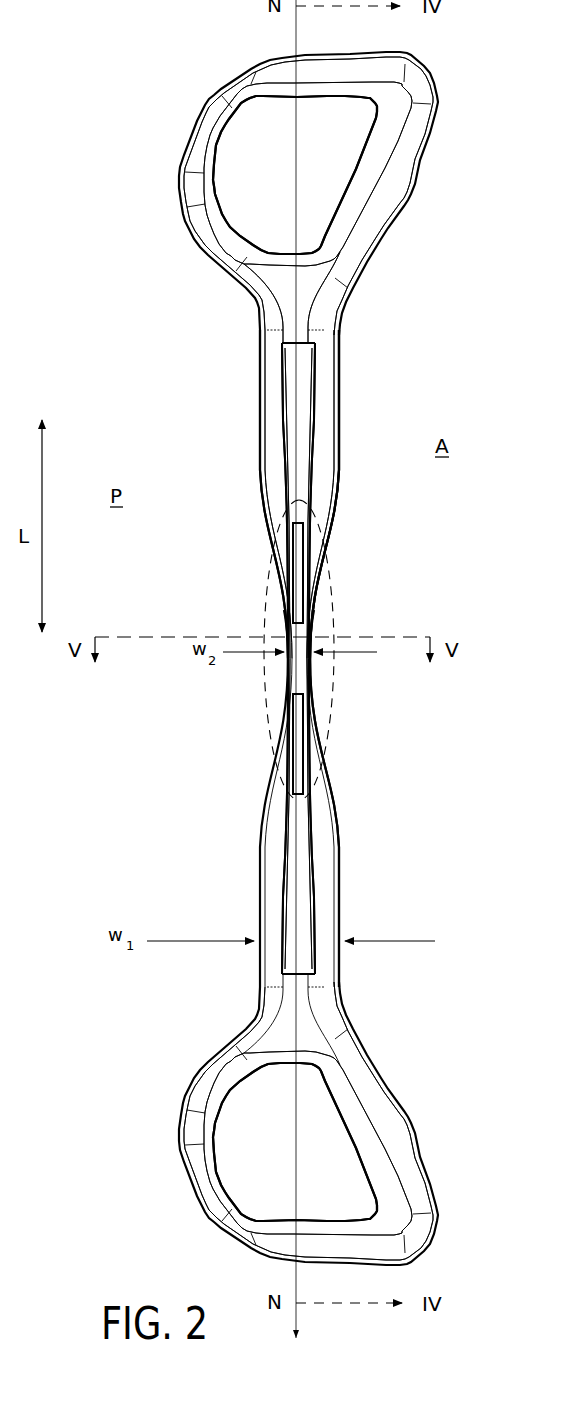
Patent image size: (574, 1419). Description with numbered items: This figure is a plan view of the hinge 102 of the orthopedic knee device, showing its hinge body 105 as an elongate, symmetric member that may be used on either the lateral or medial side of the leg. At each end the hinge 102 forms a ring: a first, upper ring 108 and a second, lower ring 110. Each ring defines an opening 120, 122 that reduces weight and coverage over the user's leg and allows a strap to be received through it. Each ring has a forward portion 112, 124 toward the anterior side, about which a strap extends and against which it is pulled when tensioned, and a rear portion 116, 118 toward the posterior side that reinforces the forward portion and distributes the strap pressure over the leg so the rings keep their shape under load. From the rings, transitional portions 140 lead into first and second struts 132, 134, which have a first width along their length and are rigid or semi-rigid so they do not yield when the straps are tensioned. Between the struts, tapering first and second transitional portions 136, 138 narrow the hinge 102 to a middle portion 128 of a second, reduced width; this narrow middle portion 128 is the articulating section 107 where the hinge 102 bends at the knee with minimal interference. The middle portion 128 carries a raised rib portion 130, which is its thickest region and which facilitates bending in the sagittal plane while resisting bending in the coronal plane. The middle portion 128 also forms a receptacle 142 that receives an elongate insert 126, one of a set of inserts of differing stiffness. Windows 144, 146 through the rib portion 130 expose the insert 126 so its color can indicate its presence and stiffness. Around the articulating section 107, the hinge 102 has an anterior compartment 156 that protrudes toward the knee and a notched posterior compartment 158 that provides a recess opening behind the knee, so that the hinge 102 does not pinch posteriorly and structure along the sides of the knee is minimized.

The hinge 102 is at (240, 486).
The hinge body 105 is at (342, 365).
The articulating section 107 is at (330, 623).
The first ring 108 is at (178, 180).
The second ring 110 is at (182, 1190).
The forward portion 112 is at (390, 207).
The rear portion 116 is at (215, 122).
The rear portion 118 is at (198, 1075).
The opening 120 is at (242, 190).
The opening 122 is at (327, 1173).
The forward portion 124 is at (373, 1105).
The insert 126 is at (287, 760).
The middle portion 128 is at (290, 667).
The raised rib portion 130 is at (298, 668).
The first strut 132 is at (300, 423).
The second strut 134 is at (312, 883).
The first transitional portion 136 is at (325, 558).
The second transitional portion 138 is at (325, 745).
The transitional portion 140 is at (257, 294).
The receptacle 142 is at (286, 600).
The window 144 is at (298, 598).
The window 146 is at (300, 782).
The anterior compartment 156 is at (327, 650).
The posterior compartment 158 is at (268, 650).